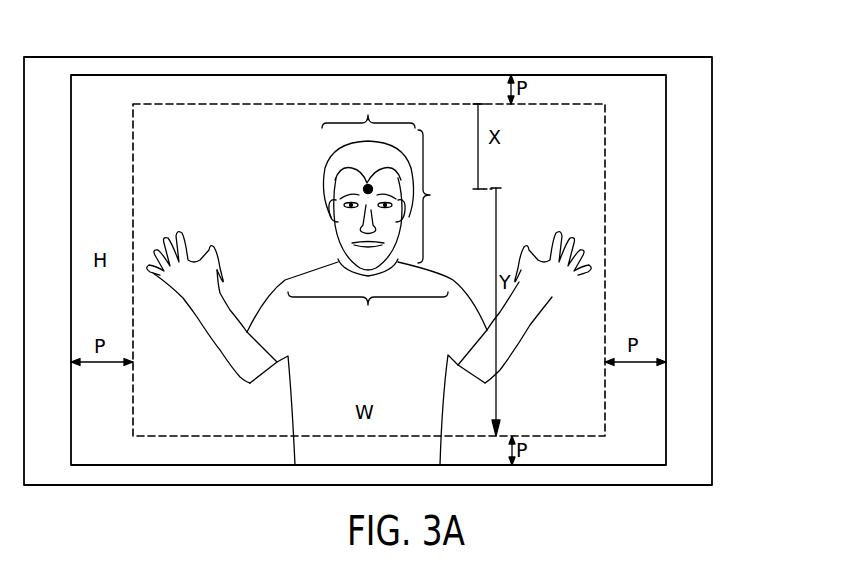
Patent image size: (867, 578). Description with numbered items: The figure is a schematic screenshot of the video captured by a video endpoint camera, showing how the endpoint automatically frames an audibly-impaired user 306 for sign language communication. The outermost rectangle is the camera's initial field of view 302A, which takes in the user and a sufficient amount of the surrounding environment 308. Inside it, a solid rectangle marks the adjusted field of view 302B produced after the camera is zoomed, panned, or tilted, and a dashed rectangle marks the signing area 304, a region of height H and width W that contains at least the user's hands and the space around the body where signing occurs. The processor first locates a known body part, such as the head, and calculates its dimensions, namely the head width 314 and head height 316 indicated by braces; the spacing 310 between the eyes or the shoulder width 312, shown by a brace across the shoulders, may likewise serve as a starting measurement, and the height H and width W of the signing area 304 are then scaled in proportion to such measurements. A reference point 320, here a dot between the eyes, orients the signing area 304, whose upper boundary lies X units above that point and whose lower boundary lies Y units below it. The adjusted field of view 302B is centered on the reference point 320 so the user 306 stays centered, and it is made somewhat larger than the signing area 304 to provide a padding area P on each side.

The initial field of view 302A is at (713, 217).
The adjusted field of view 302B is at (585, 73).
The signing area 304 is at (607, 162).
The audibly-impaired user 306 is at (388, 343).
The environment 308 is at (649, 112).
The spacing between the eyes 310 is at (368, 205).
The shoulder width 312 is at (368, 312).
The head width 314 is at (368, 107).
The head height 316 is at (448, 196).
The reference point 320 is at (364, 190).